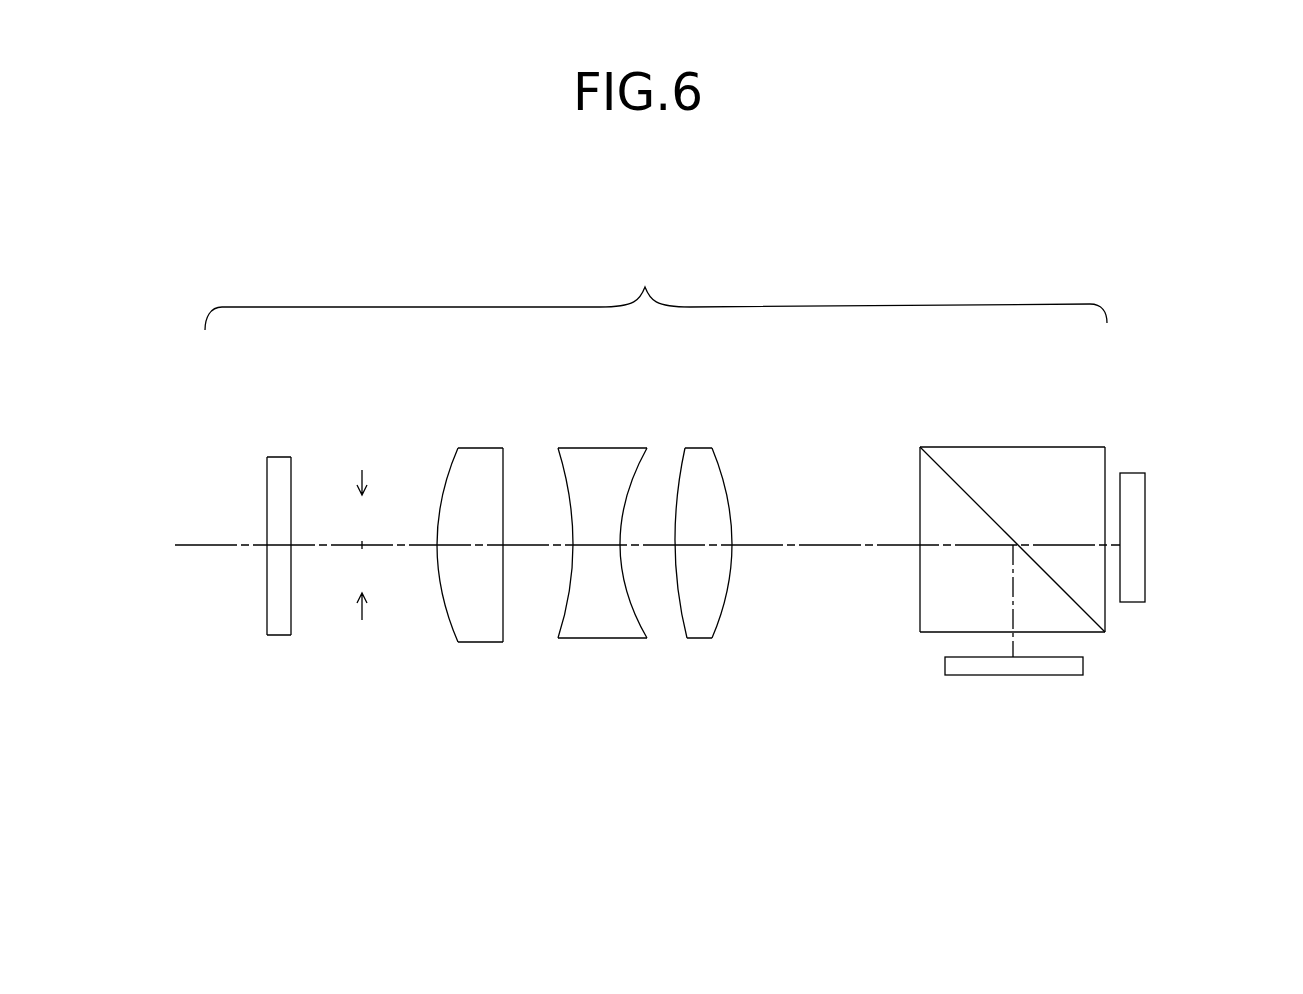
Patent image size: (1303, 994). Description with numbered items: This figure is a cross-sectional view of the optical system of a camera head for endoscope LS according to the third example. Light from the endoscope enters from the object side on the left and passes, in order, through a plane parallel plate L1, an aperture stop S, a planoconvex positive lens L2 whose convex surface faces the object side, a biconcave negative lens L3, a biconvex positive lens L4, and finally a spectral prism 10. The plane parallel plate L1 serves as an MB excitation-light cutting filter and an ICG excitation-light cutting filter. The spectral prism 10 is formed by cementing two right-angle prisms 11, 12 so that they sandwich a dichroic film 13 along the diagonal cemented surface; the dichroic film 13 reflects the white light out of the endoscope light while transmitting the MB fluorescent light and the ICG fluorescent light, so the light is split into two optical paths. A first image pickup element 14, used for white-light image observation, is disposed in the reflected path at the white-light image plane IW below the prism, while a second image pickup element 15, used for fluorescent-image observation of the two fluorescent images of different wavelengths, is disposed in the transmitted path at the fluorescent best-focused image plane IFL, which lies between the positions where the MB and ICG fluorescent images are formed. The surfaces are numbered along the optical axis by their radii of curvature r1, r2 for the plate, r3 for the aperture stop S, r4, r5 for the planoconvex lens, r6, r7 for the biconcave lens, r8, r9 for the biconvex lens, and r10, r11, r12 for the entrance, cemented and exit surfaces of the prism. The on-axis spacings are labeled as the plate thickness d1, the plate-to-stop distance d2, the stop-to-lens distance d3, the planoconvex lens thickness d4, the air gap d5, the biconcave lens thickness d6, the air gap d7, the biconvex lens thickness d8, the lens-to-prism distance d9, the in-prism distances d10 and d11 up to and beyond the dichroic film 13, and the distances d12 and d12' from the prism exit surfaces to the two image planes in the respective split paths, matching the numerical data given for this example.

The camera-head optical system LS is at (656, 292).
The plane parallel plate L1 is at (281, 456).
The planoconvex positive lens L2 is at (480, 447).
The biconcave negative lens L3 is at (612, 446).
The biconvex positive lens L4 is at (702, 446).
The aperture stop S is at (356, 476).
The radius of curvature of first lens surface r1 is at (267, 486).
The radius of curvature of second lens surface r2 is at (291, 486).
The radius of curvature of third surface (aperture stop) r3 is at (360, 484).
The radius of curvature of fourth lens surface r4 is at (450, 467).
The radius of curvature of fifth lens surface r5 is at (503, 466).
The radius of curvature of sixth lens surface r6 is at (562, 472).
The radius of curvature of seventh lens surface r7 is at (642, 472).
The radius of curvature of eighth lens surface r8 is at (680, 477).
The radius of curvature of ninth lens surface r9 is at (727, 472).
The radius of curvature of tenth surface r10 is at (920, 471).
The radius of curvature of eleventh surface r11 is at (948, 474).
The radius of curvature of twelfth surface r12 is at (1105, 455).
The distance between lens surfaces d1 is at (278, 545).
The distance between lens surfaces d2 is at (323, 545).
The distance between lens surfaces d3 is at (397, 545).
The distance between lens surfaces d4 is at (467, 545).
The distance between lens surfaces d5 is at (528, 545).
The distance between lens surfaces d6 is at (598, 545).
The distance between lens surfaces d7 is at (653, 545).
The distance between lens surfaces d8 is at (695, 545).
The distance between lens surfaces d9 is at (793, 545).
The distance between lens surfaces d10 is at (963, 545).
The distance between lens surfaces d11 is at (1015, 597).
The distance between lens surfaces d12 is at (1039, 662).
The distance between lens surfaces d12' is at (1174, 600).
The spectral prism 10 is at (1098, 355).
The right-angle prism 11 is at (1048, 445).
The right-angle prism 12 is at (920, 605).
The dichroic film 13 is at (972, 498).
The first image pickup element 14 is at (983, 677).
The second image pickup element 15 is at (1145, 508).
The fluorescent best-focused image plane IFL is at (1120, 485).
The white-light image plane IW is at (958, 657).